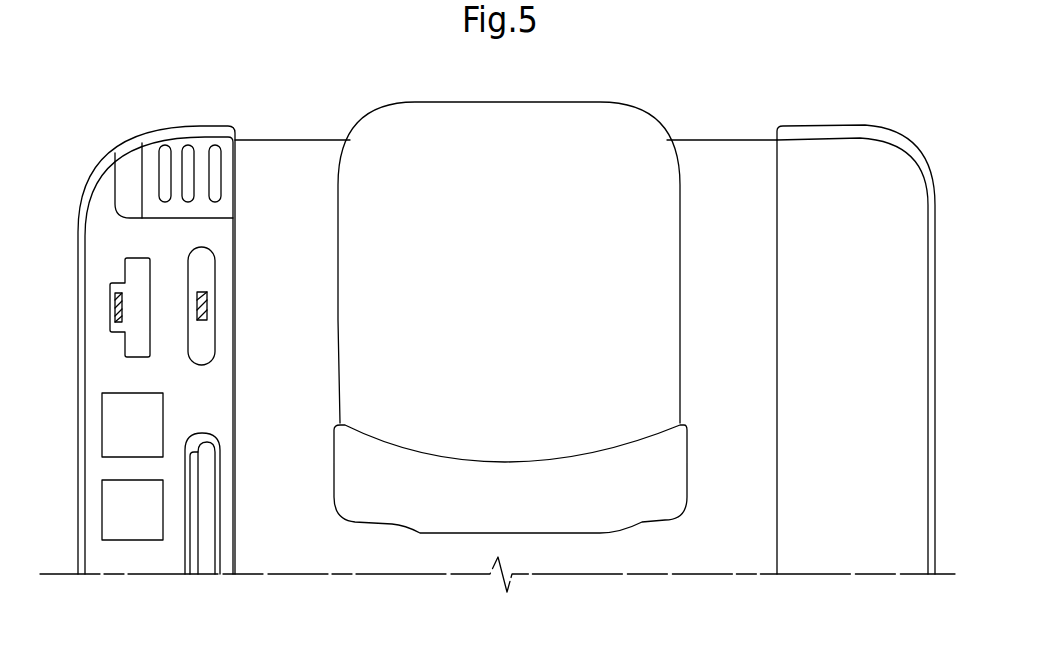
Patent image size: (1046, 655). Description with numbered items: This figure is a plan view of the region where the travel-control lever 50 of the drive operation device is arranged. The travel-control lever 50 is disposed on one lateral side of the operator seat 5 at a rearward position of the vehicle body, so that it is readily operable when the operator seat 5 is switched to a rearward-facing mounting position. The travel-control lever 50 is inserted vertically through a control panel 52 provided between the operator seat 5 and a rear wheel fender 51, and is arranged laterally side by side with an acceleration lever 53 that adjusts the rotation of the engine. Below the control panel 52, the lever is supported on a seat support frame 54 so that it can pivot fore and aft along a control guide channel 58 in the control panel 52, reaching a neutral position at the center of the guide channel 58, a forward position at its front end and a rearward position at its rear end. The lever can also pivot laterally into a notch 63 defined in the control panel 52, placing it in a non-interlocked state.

The operator seat 5 is at (645, 132).
The travel-control lever 50 is at (122, 303).
The rear wheel fender 51 is at (98, 158).
The control panel 52 is at (225, 232).
The acceleration lever 53 is at (207, 305).
The seat support frame 54 is at (313, 160).
The control guide channel 58 is at (142, 343).
The notch 63 is at (116, 335).